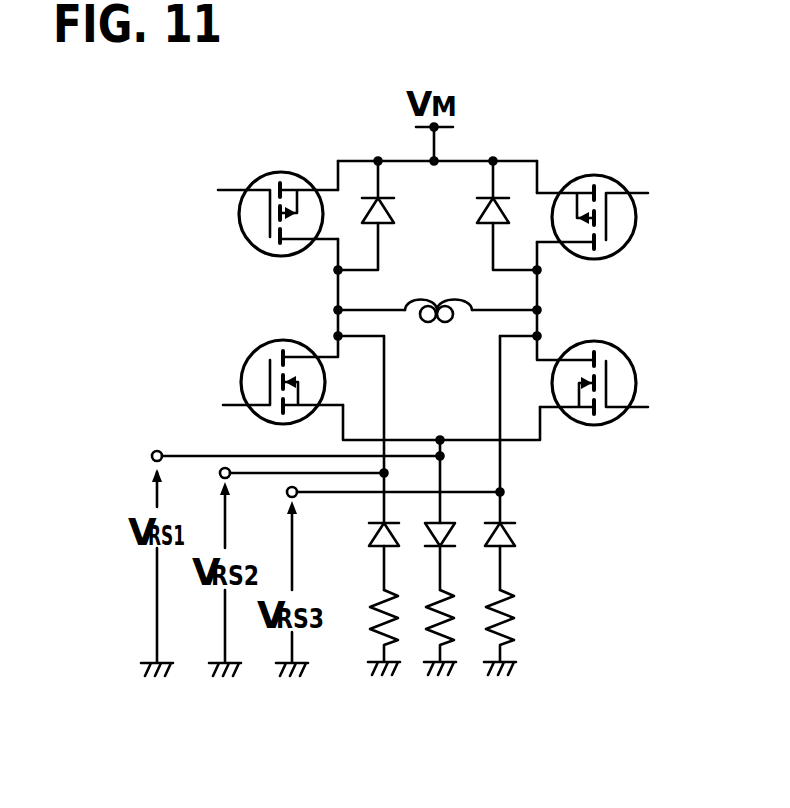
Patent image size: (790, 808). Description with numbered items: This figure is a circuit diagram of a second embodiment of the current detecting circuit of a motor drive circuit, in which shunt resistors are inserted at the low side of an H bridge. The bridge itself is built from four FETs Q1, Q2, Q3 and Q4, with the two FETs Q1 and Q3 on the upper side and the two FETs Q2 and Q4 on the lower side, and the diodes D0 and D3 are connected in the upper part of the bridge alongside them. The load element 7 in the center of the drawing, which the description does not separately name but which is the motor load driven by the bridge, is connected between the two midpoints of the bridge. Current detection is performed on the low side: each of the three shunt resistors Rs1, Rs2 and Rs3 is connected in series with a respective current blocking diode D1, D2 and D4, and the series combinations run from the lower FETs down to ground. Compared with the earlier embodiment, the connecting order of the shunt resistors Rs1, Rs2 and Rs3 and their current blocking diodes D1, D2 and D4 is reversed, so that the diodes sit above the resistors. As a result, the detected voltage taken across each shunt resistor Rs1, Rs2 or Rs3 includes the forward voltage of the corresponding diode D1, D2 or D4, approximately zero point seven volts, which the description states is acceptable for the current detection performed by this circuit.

The coil (motor winding) 7 is at (445, 322).
The FET Q1 is at (266, 218).
The FET Q2 is at (268, 380).
The FET Q3 is at (618, 219).
The FET Q4 is at (618, 384).
The diode D0 is at (395, 211).
The current blocking diode D1 is at (450, 522).
The current blocking diode D2 is at (369, 532).
The diode D3 is at (483, 225).
The current blocking diode D4 is at (513, 538).
The shunt resistor Rs1 is at (450, 633).
The shunt resistor Rs2 is at (394, 633).
The shunt resistor Rs3 is at (508, 633).